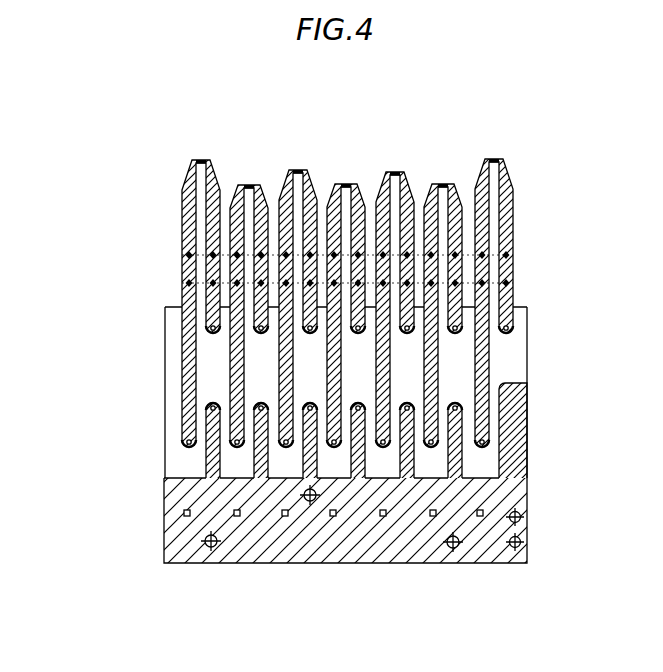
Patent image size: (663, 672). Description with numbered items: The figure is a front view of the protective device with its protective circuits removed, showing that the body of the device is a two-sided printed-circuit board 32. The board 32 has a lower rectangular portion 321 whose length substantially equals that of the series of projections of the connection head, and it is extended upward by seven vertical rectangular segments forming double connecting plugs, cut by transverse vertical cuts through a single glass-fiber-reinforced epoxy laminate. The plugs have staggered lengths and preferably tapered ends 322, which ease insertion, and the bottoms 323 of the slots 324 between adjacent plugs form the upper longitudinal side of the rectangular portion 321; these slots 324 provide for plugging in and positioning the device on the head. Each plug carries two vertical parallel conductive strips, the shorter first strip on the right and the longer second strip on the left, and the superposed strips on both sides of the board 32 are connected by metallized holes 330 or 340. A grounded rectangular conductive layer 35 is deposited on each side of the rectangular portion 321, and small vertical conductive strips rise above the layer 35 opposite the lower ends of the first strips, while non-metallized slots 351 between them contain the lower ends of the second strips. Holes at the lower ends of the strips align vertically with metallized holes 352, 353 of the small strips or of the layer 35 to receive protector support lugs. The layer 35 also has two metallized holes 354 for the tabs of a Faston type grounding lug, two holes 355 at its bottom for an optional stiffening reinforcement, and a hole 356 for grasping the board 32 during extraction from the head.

The printed-circuit board 32 is at (74, 356).
The rectangular conductive layer 35 is at (378, 550).
The lower rectangular portion 321 is at (166, 366).
The plug end 322 is at (497, 159).
The slot bottom 323 is at (227, 301).
The slot 324 is at (273, 220).
The metallized hole 330 is at (506, 260).
The metallized hole 340 is at (498, 257).
The non-metallized slot 351 is at (268, 420).
The metallized hole 352 is at (458, 405).
The metallized hole 353 is at (435, 513).
The metallized hole 354 is at (528, 518).
The hole 355 is at (211, 548).
The hole 356 is at (310, 502).